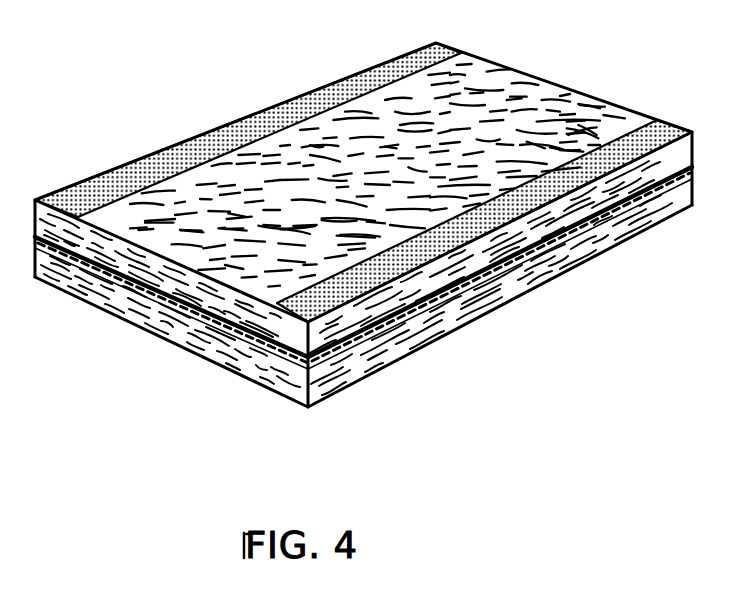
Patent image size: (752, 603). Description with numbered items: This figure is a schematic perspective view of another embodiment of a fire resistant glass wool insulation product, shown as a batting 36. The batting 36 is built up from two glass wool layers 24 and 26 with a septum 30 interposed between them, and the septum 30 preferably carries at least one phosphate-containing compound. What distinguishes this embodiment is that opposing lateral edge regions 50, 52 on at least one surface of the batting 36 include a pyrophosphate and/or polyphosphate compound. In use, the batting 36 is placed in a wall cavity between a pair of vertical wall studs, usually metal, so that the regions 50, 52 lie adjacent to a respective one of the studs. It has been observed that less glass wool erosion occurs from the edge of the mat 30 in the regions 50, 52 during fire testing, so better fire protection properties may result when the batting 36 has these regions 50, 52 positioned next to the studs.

The glass wool layer 24 is at (583, 202).
The glass wool layer 26 is at (370, 353).
The septum 30 is at (472, 283).
The batting 36 is at (132, 108).
The lateral edge region 50 is at (440, 39).
The lateral edge region 52 is at (699, 125).